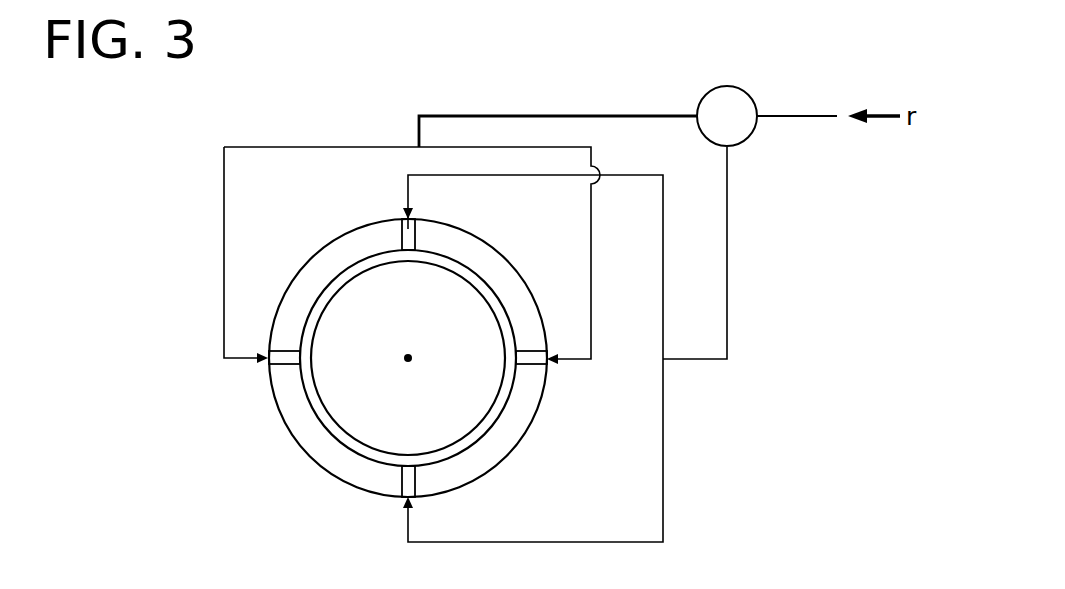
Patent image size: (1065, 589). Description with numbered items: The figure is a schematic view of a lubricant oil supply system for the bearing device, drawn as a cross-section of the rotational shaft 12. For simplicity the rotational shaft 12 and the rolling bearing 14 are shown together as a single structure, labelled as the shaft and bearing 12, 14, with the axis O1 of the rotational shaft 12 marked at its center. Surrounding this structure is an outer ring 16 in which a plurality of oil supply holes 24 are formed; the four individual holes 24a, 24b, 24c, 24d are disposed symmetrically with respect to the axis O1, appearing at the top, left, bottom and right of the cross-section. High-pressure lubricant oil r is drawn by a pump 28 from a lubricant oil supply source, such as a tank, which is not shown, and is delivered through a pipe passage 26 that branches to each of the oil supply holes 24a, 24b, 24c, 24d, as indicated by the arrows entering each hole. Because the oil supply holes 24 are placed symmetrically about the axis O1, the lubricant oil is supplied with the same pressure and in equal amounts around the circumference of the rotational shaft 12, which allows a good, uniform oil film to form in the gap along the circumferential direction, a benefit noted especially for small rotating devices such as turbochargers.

The rotational shaft 12 is at (408, 358).
The rolling bearing 14 is at (449, 317).
The stator / outer ring 16 is at (489, 258).
The oil supply holes 24 is at (411, 356).
The oil supply hole 24a is at (406, 233).
The oil supply hole 24b is at (286, 362).
The oil supply hole 24c is at (403, 482).
The oil supply hole 24d is at (529, 363).
The pipe passage 26 is at (517, 115).
The pump 28 is at (742, 89).
The axis of the rotational shaft O1 is at (411, 361).